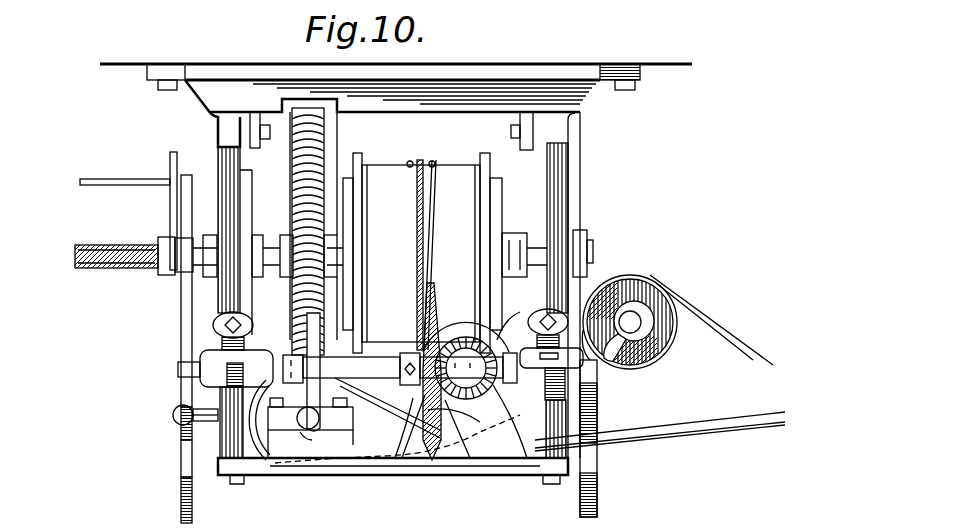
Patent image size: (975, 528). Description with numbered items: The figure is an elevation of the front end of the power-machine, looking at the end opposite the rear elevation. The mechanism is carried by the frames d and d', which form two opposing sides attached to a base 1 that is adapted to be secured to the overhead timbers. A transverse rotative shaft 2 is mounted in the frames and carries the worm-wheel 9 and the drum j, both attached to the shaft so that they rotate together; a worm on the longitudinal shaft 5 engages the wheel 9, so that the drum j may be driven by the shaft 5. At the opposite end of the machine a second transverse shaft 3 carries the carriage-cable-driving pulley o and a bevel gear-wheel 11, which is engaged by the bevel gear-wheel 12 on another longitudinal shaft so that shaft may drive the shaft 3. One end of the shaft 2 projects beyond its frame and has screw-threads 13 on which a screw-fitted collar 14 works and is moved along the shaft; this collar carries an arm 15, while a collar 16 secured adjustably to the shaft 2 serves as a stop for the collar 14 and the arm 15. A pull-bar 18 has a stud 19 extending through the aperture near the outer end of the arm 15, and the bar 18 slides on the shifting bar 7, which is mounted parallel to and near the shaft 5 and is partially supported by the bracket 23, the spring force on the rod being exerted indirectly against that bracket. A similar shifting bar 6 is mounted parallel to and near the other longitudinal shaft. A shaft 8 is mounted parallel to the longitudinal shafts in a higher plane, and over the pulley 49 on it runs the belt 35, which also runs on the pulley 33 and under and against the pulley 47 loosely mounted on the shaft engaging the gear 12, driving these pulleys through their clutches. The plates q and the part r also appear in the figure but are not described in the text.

The base 1 is at (460, 108).
The rotative shaft 2 is at (594, 250).
The rotative shaft 3 is at (198, 370).
The rotative shaft 5 is at (303, 418).
The shifting bar 6 is at (598, 475).
The shifting bar 7 is at (181, 472).
The shaft 8 is at (674, 340).
The worm-wheel 9 is at (291, 184).
The bevel gear-wheel 11 is at (418, 452).
The bevel gear-wheel 12 is at (460, 336).
The screw-threads 13 is at (103, 246).
The screw-fitted collar 14 is at (165, 277).
The arm 15 is at (168, 152).
The collar 16 is at (193, 236).
The pull-bar 18 is at (181, 333).
The stud 19 is at (97, 179).
The bracket 23 is at (172, 413).
The pulley 33 is at (357, 432).
The belt 35 is at (724, 328).
The pulley 47 is at (503, 338).
The pulley 49 is at (632, 370).
The frame d is at (573, 285).
The frame d' is at (211, 269).
The drum j is at (383, 169).
The disc plates q is at (415, 227).
The carriage-cable-driving pulley o is at (318, 424).
The pivot r is at (304, 445).